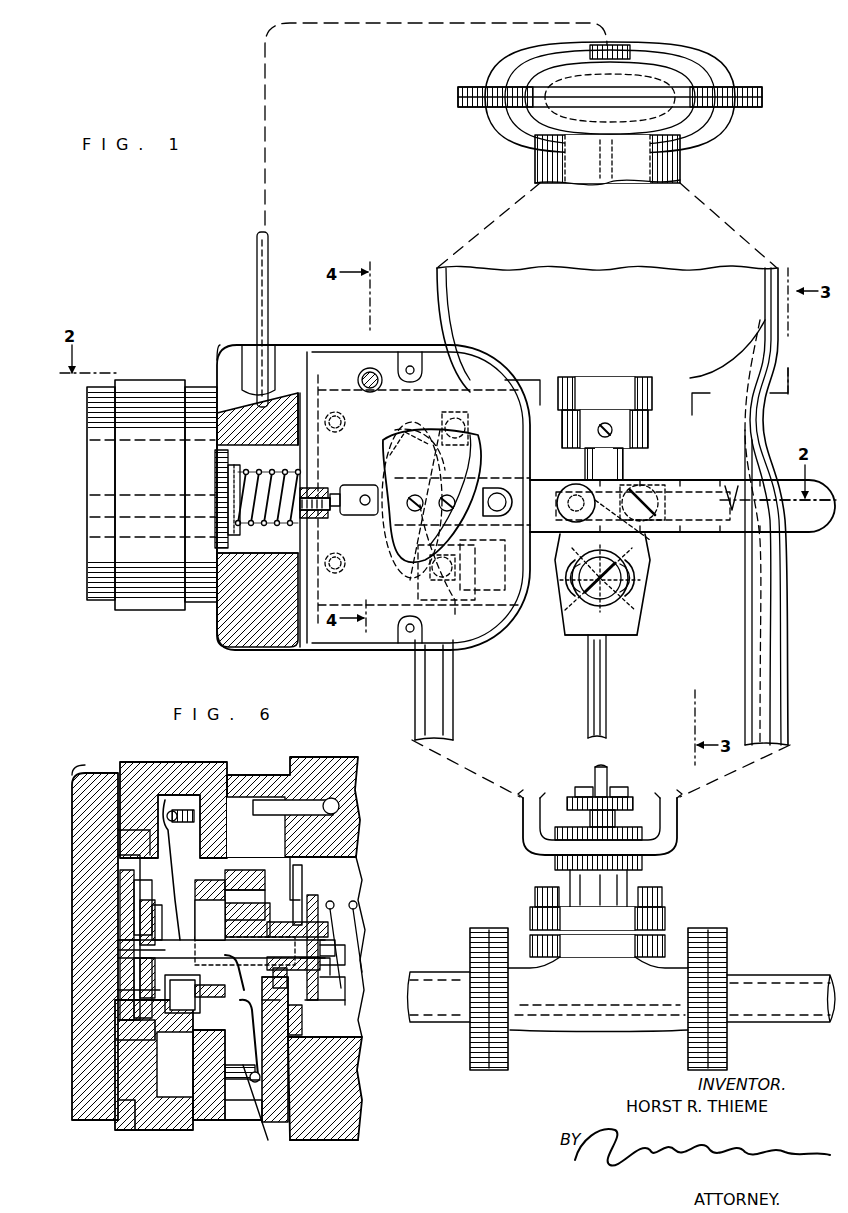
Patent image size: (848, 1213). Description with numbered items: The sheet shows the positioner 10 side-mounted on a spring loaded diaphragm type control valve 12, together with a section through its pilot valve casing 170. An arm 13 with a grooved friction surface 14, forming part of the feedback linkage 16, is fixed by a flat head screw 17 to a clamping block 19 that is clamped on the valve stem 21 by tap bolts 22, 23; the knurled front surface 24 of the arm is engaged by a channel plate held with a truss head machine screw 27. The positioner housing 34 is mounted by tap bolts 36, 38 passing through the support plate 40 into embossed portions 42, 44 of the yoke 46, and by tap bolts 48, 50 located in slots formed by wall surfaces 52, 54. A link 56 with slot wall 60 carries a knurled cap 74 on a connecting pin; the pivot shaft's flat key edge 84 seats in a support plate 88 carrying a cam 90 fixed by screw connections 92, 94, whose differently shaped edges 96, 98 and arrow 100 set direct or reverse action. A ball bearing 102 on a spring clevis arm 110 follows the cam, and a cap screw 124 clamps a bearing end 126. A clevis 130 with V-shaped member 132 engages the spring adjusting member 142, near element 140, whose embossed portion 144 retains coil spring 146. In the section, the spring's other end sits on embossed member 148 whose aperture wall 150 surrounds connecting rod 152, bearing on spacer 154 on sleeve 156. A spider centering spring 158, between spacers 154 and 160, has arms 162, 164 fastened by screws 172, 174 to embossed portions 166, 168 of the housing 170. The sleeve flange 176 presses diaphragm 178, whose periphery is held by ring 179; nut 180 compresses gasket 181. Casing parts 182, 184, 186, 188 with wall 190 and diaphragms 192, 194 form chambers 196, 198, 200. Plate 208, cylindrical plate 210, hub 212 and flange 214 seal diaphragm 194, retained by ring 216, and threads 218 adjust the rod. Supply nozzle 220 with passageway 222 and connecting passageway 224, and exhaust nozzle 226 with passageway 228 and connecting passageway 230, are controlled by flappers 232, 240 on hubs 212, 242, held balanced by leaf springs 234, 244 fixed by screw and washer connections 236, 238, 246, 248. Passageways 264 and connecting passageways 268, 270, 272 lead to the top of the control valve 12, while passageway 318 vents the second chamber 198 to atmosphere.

In FIG. 1, the positioner 10 is at (235, 312).
In FIG. 1, the control valve 12 is at (745, 72).
In FIG. 1, the arm 13 is at (652, 543).
In FIG. 1, the friction surface 14 is at (572, 608).
In FIG. 1, the feedback linkage 16 is at (678, 552).
In FIG. 1, the flat head screw 17 is at (614, 585).
In FIG. 1, the clamping block 19 is at (582, 635).
In FIG. 1, the control valve stem 21 is at (602, 675).
In FIG. 1, the tap bolt 22 is at (556, 586).
In FIG. 1, the tap bolt 23 is at (658, 582).
In FIG. 1, the radially knurled surface 24 is at (640, 488).
In FIG. 1, the truss head machine screw 27 is at (655, 505).
In FIG. 1, the positioner housing 34 is at (405, 335).
In FIG. 6, the positioner housing 34 is at (345, 1100).
In FIG. 1, the tap bolt 36 is at (465, 380).
In FIG. 1, the tap bolt 38 is at (390, 590).
In FIG. 1, the support plate 40 is at (320, 392).
In FIG. 1, the embossed portion 42 is at (482, 428).
In FIG. 1, the embossed portion 44 is at (447, 586).
In FIG. 1, the yoke 46 is at (432, 694).
In FIG. 1, the tap bolt 48 is at (345, 410).
In FIG. 1, the tap bolt 50 is at (300, 570).
In FIG. 1, the wall surface 52 is at (300, 425).
In FIG. 1, the wall surface 54 is at (300, 603).
In FIG. 1, the link 56 is at (795, 527).
In FIG. 1, the wall portion 60 is at (730, 500).
In FIG. 1, the knurled cap 74 is at (573, 497).
In FIG. 1, the flat key edge 84 is at (498, 515).
In FIG. 1, the support plate 88 is at (490, 490).
In FIG. 1, the cam 90 is at (408, 582).
In FIG. 1, the screw connection 92 is at (445, 496).
In FIG. 1, the screw connection 94 is at (412, 496).
In FIG. 1, the cam edge 96 is at (445, 548).
In FIG. 1, the cam edge 98 is at (410, 432).
In FIG. 1, the arrow 100 is at (395, 565).
In FIG. 1, the ball bearing 102 is at (356, 483).
In FIG. 1, the clevis arm 110 is at (372, 442).
In FIG. 1, the cap screw 124 is at (363, 370).
In FIG. 1, the bearing end 126 is at (375, 366).
In FIG. 1, the clevis 130 is at (300, 445).
In FIG. 1, the V-shaped member 132 is at (362, 515).
In FIG. 1, the adjusting nut 140 is at (330, 515).
In FIG. 1, the coil spring adjusting member 142 is at (298, 525).
In FIG. 1, the embossed portion 144 is at (302, 485).
In FIG. 1, the coil spring 146 is at (258, 540).
In FIG. 6, the coil spring 146 is at (352, 902).
In FIG. 6, the embossed cylindrical member 148 is at (342, 918).
In FIG. 6, the aperture wall 150 is at (345, 975).
In FIG. 6, the connecting rod 152 is at (300, 928).
In FIG. 6, the first spacer sleeve 154 is at (335, 936).
In FIG. 6, the sleeve 156 is at (348, 992).
In FIG. 6, the centering spring 158 is at (316, 930).
In FIG. 6, the second spacer 160 is at (290, 985).
In FIG. 6, the centering spring arm 162 is at (300, 1037).
In FIG. 6, the centering spring arm 164 is at (305, 1010).
In FIG. 6, the embossed portion 166 is at (323, 837).
In FIG. 6, the embossed portion 168 is at (300, 1040).
In FIG. 1, the pilot valve housing 170 is at (145, 360).
In FIG. 6, the pilot valve housing 170 is at (150, 750).
In FIG. 6, the screw 172 is at (312, 878).
In FIG. 6, the screw 174 is at (300, 1030).
In FIG. 6, the cylindrical flange 176 is at (250, 925).
In FIG. 6, the diaphragm 178 is at (286, 1040).
In FIG. 6, the ring 179 is at (305, 890).
In FIG. 6, the nut 180 is at (325, 962).
In FIG. 6, the gasket 181 is at (268, 962).
In FIG. 6, the casing part 182 is at (88, 790).
In FIG. 6, the casing part 184 is at (165, 1120).
In FIG. 6, the casing part 186 is at (210, 1115).
In FIG. 6, the casing part 188 is at (232, 1115).
In FIG. 6, the wall 190 is at (110, 946).
In FIG. 6, the diaphragm 192 is at (110, 993).
In FIG. 6, the diaphragm 194 is at (120, 935).
In FIG. 6, the first chamber 196 is at (110, 985).
In FIG. 6, the second chamber 198 is at (130, 1033).
In FIG. 6, the third chamber 200 is at (165, 820).
In FIG. 6, the plate 208 is at (105, 865).
In FIG. 6, the cylindrical plate 210 is at (135, 948).
In FIG. 6, the hub portion 212 is at (120, 954).
In FIG. 6, the flange 214 is at (130, 940).
In FIG. 6, the ring-shaped member 216 is at (135, 975).
In FIG. 6, the screw threads 218 is at (183, 994).
In FIG. 6, the air supply nozzle 220 is at (200, 878).
In FIG. 6, the air passageway 222 is at (222, 888).
In FIG. 6, the connecting passageway 224 is at (240, 905).
In FIG. 6, the exhaust nozzle 226 is at (240, 960).
In FIG. 6, the passageway 228 is at (210, 1000).
In FIG. 6, the connecting passageway 230 is at (180, 1010).
In FIG. 6, the flapper 232 is at (130, 900).
In FIG. 6, the curved leaf spring 234 is at (108, 845).
In FIG. 6, the screw 236 is at (178, 800).
In FIG. 6, the washer 238 is at (168, 795).
In FIG. 6, the flapper 240 is at (250, 1005).
In FIG. 6, the hub portion 242 is at (235, 935).
In FIG. 6, the leaf spring 244 is at (310, 1120).
In FIG. 6, the screw 246 is at (241, 1105).
In FIG. 6, the washer 248 is at (248, 1083).
In FIG. 6, the passageway 264 is at (270, 800).
In FIG. 6, the connecting passageway 268 is at (305, 805).
In FIG. 6, the connecting passageway 270 is at (332, 800).
In FIG. 1, the connecting passageway 272 is at (265, 195).
In FIG. 6, the passageway 318 is at (135, 1123).